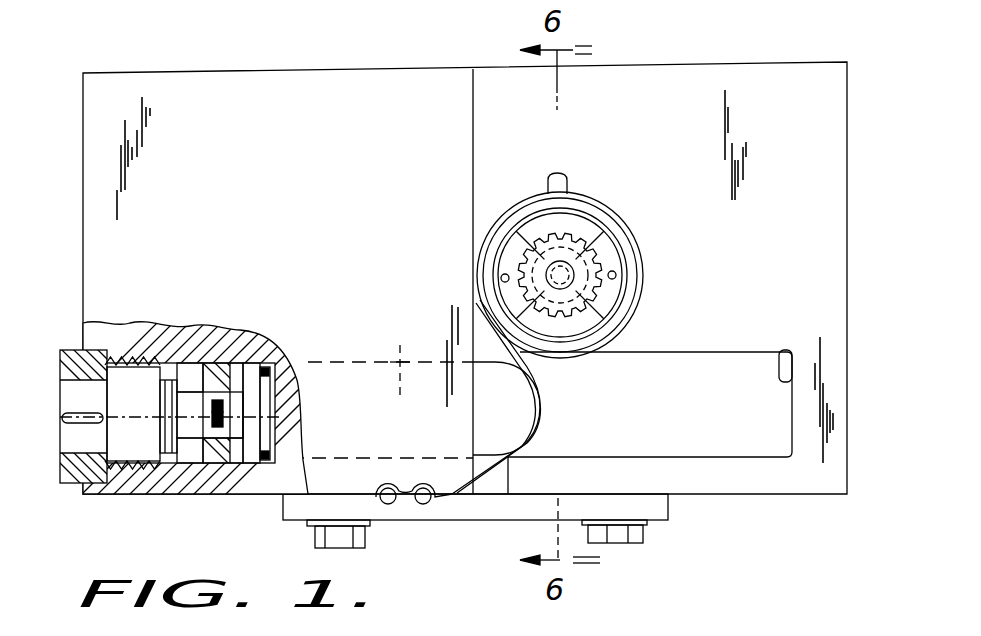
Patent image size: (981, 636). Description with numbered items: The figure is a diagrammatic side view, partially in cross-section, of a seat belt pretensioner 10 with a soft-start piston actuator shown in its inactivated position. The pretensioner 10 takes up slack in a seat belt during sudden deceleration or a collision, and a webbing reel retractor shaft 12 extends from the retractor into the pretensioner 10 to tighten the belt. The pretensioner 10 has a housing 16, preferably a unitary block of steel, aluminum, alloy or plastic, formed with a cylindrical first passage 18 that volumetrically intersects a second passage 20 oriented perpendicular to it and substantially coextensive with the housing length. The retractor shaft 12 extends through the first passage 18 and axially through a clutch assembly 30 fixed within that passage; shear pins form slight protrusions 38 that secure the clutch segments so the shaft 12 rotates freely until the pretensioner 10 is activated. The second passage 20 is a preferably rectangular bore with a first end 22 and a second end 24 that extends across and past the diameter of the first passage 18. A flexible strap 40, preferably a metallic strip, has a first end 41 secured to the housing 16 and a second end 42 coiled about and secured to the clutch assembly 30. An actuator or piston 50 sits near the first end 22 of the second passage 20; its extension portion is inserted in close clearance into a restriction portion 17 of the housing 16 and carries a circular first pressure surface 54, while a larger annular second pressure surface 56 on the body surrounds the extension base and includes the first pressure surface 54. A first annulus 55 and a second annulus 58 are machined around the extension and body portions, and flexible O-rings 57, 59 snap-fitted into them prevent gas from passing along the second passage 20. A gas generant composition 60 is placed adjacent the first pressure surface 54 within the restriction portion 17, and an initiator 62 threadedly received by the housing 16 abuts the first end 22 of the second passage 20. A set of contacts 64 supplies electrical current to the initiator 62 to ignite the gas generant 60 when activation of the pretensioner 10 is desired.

The pretensioner 10 is at (74, 66).
The housing 16 is at (353, 238).
The clutch assembly 30 is at (558, 268).
The actuator or piston 50 is at (406, 357).
The second passage 20 is at (708, 437).
The second end of second passage 24 is at (787, 350).
The first end of strap 41 is at (353, 502).
The flexible strap 40 is at (523, 450).
The first passage 18 is at (598, 200).
The second end of strap 42 is at (587, 322).
The webbing reel retractor shaft 12 is at (575, 258).
The protrusions 38 is at (617, 275).
The first end of second passage 22 is at (243, 482).
The contacts 64 is at (62, 417).
The initiator 62 is at (130, 452).
The gas generant composition 60 is at (203, 417).
The restriction portion 17 is at (243, 393).
The first pressure surface 54 is at (197, 400).
The first annulus 55 is at (223, 410).
The O-ring 57 is at (223, 422).
The second pressure surface 56 is at (227, 460).
The second annulus 58 is at (262, 380).
The O-ring 59 is at (271, 360).